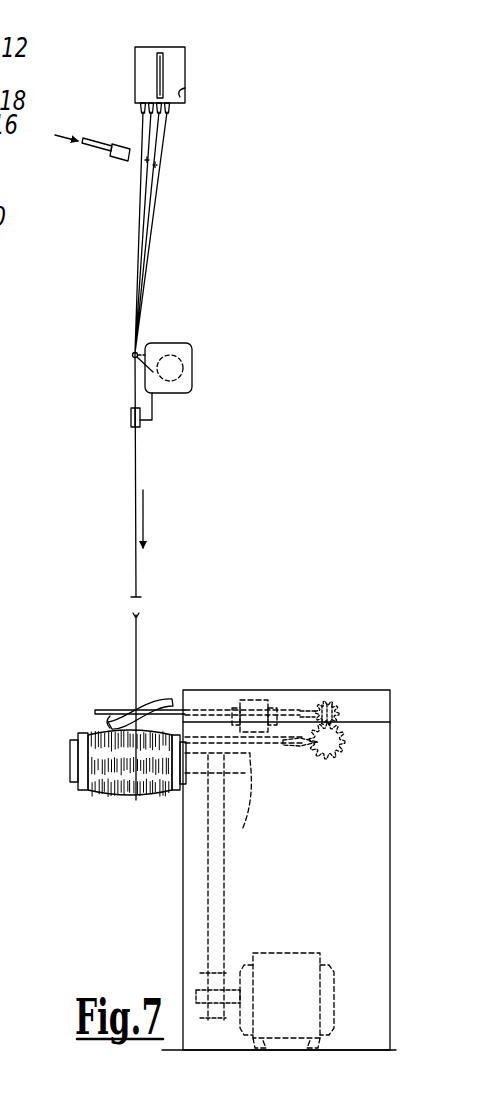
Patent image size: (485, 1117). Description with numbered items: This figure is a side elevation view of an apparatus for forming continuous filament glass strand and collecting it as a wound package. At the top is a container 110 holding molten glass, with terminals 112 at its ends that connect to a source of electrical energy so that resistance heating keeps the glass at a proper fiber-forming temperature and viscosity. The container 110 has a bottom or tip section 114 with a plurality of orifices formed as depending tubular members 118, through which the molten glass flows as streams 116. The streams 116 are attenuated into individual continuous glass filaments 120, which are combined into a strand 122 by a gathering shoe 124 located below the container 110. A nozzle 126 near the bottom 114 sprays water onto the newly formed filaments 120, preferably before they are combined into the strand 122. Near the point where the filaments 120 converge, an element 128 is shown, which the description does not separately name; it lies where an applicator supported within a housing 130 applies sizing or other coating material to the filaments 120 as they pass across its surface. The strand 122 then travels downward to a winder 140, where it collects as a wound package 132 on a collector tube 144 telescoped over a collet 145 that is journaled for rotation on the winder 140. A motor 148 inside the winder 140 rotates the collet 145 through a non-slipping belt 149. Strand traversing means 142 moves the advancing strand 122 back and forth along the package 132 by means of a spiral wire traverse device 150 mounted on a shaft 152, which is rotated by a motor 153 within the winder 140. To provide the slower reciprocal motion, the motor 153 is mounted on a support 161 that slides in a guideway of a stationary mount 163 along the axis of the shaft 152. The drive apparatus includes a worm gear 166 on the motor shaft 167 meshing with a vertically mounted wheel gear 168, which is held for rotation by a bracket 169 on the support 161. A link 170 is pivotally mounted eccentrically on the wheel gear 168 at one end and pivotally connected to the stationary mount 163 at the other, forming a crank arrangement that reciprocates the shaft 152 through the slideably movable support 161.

The container 110 is at (193, 51).
The terminals 112 is at (165, 80).
The bottom or tip section 114 is at (185, 88).
The streams 116 is at (160, 113).
The tubular members 118 is at (143, 110).
The continuous glass filaments 120 is at (153, 224).
The strand 122 is at (136, 478).
The gathering shoe 124 is at (140, 425).
The nozzle 126 is at (118, 160).
The eyelet 128 is at (138, 352).
The housing 130 is at (191, 346).
The wound package 132 is at (140, 798).
The winder 140 is at (181, 898).
The strand traversing means 142 is at (135, 703).
The tube 144 is at (80, 786).
The collet 145 is at (70, 770).
The motor 148 is at (318, 952).
The non-slipping belt 149 is at (226, 882).
The spiral wire traverse device 150 is at (183, 673).
The shaft 152 is at (95, 712).
The motor 153 is at (278, 700).
The support 161 is at (225, 727).
The stationary mount 163 is at (242, 830).
The worm gear 166 is at (339, 708).
The motor shaft 167 is at (300, 735).
The wheel gear 168 is at (324, 762).
The bracket 169 is at (323, 704).
The link 170 is at (338, 752).